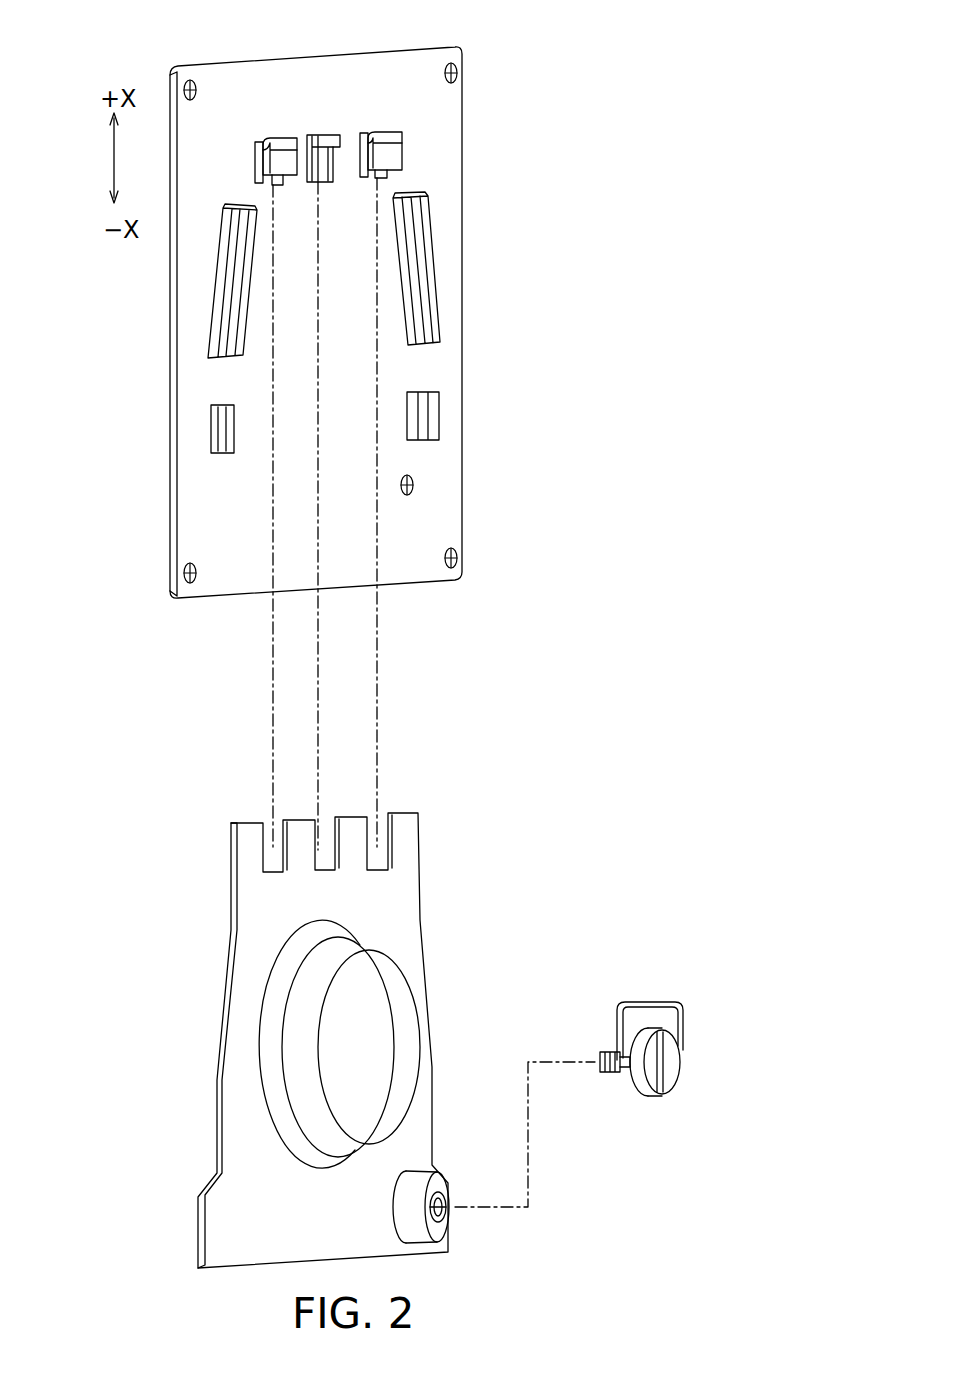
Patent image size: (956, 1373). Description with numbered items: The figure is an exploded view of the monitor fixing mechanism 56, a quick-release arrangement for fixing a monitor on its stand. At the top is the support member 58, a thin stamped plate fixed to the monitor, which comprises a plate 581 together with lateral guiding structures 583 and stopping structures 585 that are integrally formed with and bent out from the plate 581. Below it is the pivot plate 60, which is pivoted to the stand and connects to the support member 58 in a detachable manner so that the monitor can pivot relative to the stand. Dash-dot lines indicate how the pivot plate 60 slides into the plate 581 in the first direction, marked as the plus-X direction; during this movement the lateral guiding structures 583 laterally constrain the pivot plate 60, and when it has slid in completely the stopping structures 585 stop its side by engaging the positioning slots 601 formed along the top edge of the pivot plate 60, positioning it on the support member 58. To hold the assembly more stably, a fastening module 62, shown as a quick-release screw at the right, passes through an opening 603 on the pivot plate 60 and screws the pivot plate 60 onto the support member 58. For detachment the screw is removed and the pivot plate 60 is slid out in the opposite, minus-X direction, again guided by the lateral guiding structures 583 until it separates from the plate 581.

The monitor fixing mechanism 56 is at (623, 432).
The support member 58 is at (515, 228).
The plate 581 is at (455, 370).
The lateral guiding structure 583 is at (242, 288).
The stopping structure 585 is at (385, 147).
The pivot plate 60 is at (430, 952).
The positioning slot 601 is at (266, 817).
The opening 603 is at (448, 1205).
The fastening module 62 is at (695, 1050).